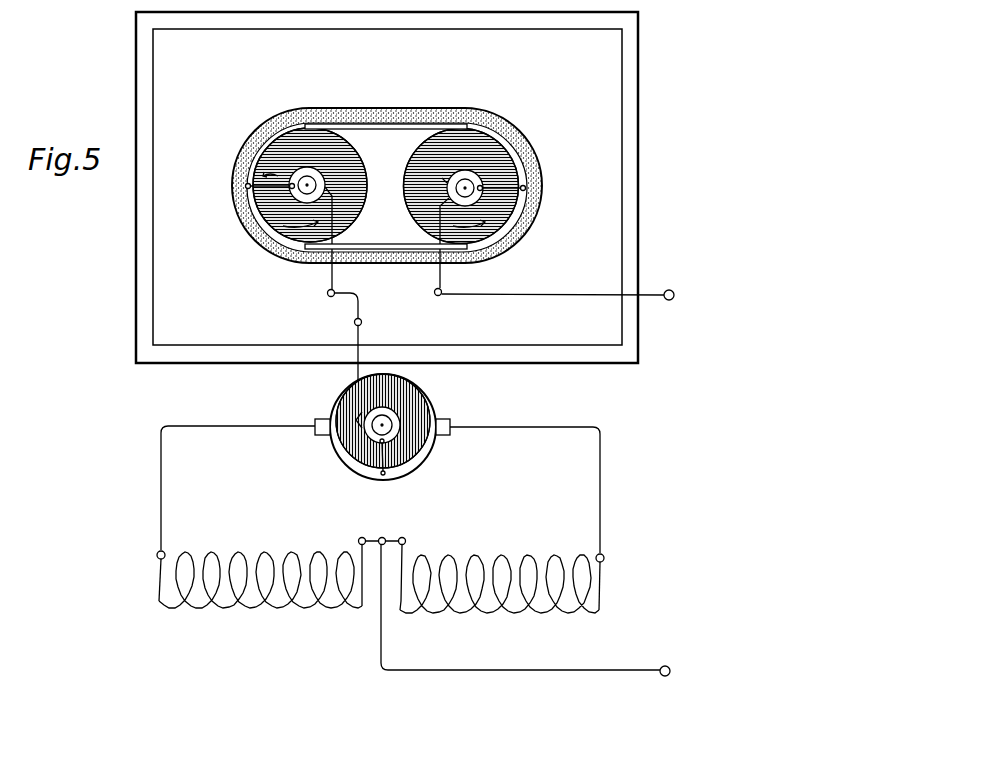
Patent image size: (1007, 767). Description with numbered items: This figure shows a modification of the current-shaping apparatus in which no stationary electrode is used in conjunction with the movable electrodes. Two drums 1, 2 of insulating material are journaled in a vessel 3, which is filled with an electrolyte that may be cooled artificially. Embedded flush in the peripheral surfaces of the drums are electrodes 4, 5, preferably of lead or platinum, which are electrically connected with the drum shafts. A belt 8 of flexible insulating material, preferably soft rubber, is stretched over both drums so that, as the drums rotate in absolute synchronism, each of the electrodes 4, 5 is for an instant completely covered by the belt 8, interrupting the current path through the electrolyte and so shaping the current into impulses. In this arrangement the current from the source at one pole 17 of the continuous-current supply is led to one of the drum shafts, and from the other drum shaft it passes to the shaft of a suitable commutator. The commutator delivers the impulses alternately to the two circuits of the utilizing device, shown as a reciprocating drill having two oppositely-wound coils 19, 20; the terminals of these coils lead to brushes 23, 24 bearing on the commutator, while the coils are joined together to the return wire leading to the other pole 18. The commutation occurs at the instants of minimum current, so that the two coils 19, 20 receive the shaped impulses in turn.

The drum 1 is at (358, 142).
The drum 2 is at (425, 145).
The vessel 3 is at (623, 209).
The electrode 4 is at (511, 168).
The electrode 5 is at (283, 178).
The belt 8 is at (458, 112).
The pole of the continuous-current supply 17 is at (570, 306).
The pole 18 is at (530, 607).
The coil 19 is at (502, 570).
The coil 20 is at (261, 564).
The brush 23 is at (442, 420).
The brush 24 is at (322, 436).